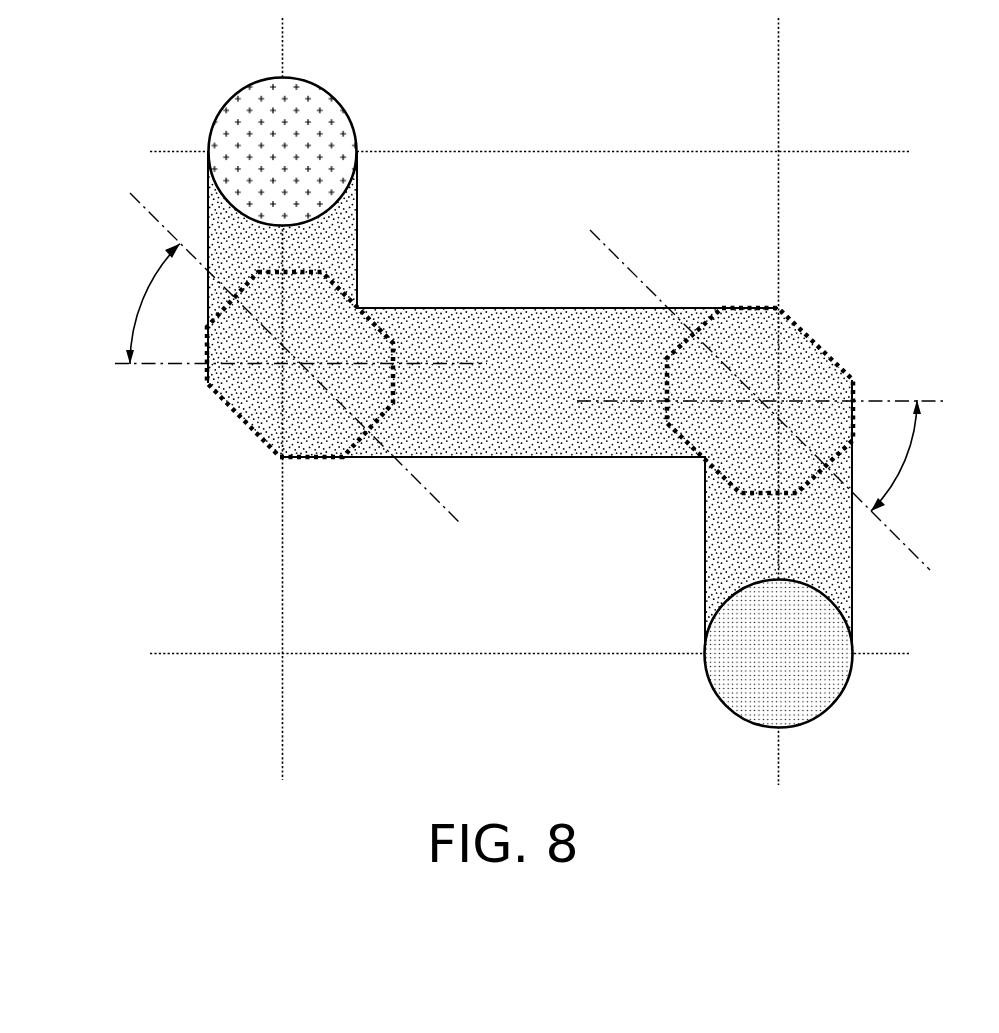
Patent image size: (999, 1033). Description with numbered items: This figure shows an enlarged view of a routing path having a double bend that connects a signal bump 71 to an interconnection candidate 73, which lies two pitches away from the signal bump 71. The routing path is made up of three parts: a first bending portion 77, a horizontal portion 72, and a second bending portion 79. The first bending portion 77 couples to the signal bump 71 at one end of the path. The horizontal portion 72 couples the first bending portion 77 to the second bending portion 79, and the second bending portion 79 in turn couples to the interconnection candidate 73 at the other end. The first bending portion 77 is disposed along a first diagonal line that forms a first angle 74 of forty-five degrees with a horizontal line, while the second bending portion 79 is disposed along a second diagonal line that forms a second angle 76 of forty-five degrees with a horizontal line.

The signal bump 71 is at (233, 98).
The horizontal portion 72 is at (513, 323).
The interconnection candidate 73 is at (833, 705).
The first angle 74 is at (142, 300).
The second angle 76 is at (907, 462).
The first bending portion 77 is at (262, 418).
The second bending portion 79 is at (807, 360).